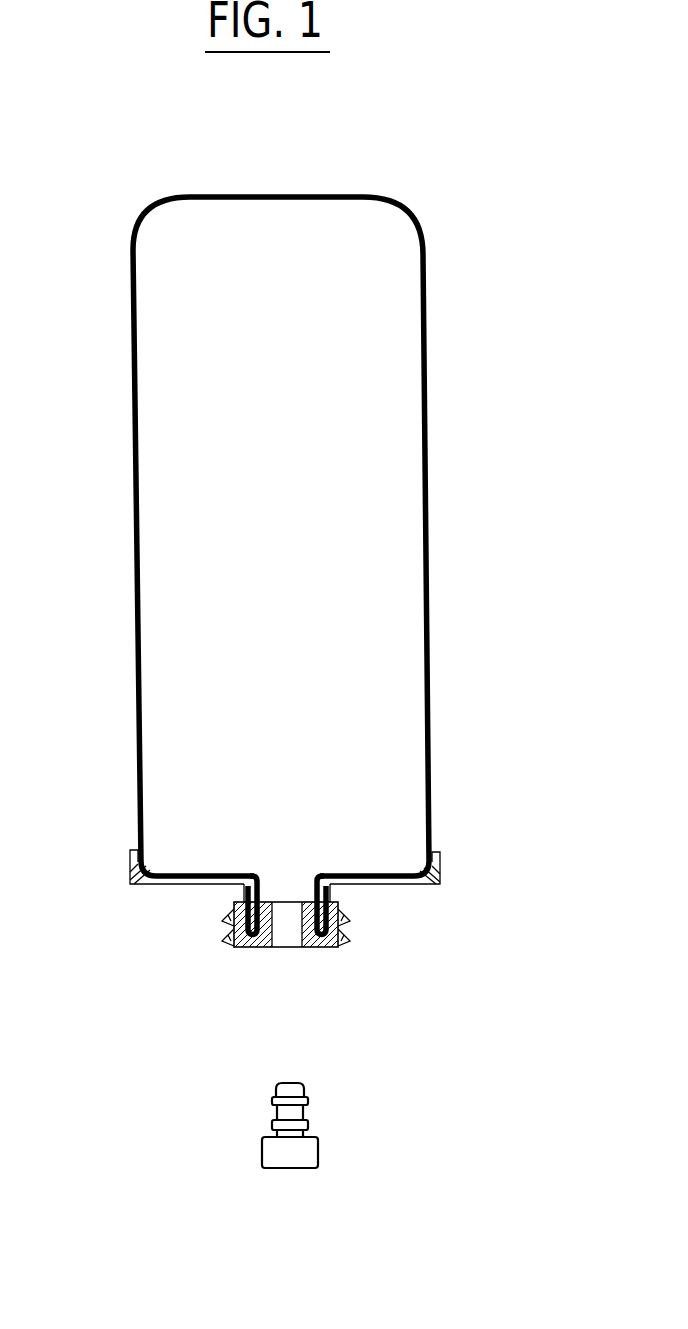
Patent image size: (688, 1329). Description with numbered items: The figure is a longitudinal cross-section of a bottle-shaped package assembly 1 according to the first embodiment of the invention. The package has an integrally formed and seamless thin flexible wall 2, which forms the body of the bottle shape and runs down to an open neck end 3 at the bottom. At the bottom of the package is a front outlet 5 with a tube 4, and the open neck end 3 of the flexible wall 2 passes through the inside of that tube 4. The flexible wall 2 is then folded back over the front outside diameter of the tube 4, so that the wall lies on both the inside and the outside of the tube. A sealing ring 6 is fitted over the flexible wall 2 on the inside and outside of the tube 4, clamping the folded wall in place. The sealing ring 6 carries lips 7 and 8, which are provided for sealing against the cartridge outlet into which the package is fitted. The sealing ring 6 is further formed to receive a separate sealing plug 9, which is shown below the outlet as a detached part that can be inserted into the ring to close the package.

The package assembly 1 is at (448, 348).
The flexible wall 2 is at (428, 642).
The open neck end 3 is at (285, 894).
The tube 4 is at (250, 892).
The front outlet 5 is at (437, 882).
The sealing ring 6 is at (249, 947).
The lip 7 is at (223, 922).
The lip 8 is at (223, 940).
The sealing plug 9 is at (273, 1150).